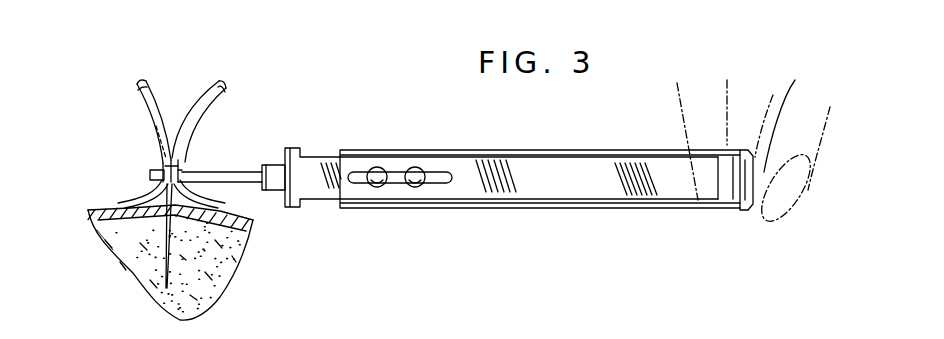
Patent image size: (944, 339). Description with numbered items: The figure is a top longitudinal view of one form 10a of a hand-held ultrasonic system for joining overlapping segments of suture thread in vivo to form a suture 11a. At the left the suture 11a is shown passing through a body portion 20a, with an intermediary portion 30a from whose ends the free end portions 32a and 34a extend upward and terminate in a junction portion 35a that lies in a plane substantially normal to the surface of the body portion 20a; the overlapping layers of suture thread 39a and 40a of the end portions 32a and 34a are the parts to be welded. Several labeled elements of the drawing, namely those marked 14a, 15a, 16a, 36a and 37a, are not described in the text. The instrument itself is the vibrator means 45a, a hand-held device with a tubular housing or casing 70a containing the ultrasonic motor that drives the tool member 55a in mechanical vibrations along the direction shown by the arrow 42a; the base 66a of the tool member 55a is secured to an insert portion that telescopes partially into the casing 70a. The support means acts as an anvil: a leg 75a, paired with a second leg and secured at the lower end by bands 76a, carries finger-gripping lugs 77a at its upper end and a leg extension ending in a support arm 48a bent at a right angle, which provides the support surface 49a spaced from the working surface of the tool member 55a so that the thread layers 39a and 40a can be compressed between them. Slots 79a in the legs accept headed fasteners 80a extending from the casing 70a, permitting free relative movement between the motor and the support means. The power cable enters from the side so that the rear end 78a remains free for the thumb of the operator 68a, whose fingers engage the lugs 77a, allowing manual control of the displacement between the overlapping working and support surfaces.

The ultrasonic system 10a is at (570, 235).
The suture 11a is at (135, 103).
The needle 14a is at (140, 287).
The anchor flange 15a is at (248, 242).
The tissue surface 16a is at (133, 212).
The body portion 20a is at (110, 273).
The intermediary portion 30a is at (229, 288).
The free end portion 32a is at (149, 83).
The free end portion 34a is at (214, 80).
The junction portion 35a is at (140, 163).
The first arm tip 36a is at (134, 74).
The second arm tip 37a is at (232, 62).
The suture thread layer 39a is at (179, 163).
The suture thread layer 40a is at (150, 186).
The arrow 42a is at (250, 143).
The vibrator means 45a is at (630, 148).
The support arm 48a is at (149, 175).
The support surface 49a is at (160, 165).
The tool member 55a is at (240, 183).
The base 66a is at (272, 166).
The operator 68a is at (817, 190).
The tubular housing 70a is at (570, 150).
The leg 75a is at (657, 193).
The bands 76a is at (292, 150).
The lugs 77a is at (739, 212).
The rear end 78a is at (753, 128).
The slots 79a is at (447, 183).
The headed fasteners 80a is at (415, 167).